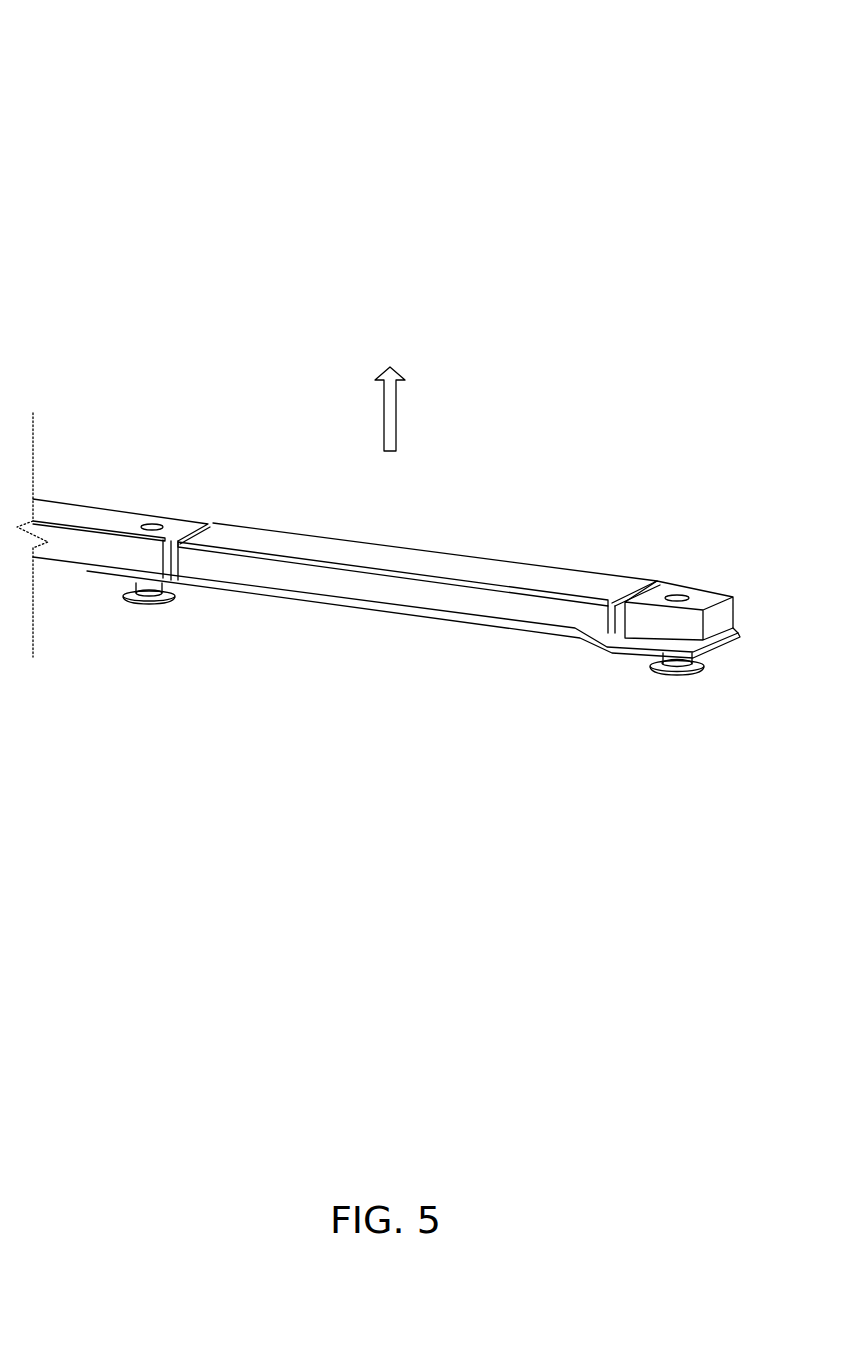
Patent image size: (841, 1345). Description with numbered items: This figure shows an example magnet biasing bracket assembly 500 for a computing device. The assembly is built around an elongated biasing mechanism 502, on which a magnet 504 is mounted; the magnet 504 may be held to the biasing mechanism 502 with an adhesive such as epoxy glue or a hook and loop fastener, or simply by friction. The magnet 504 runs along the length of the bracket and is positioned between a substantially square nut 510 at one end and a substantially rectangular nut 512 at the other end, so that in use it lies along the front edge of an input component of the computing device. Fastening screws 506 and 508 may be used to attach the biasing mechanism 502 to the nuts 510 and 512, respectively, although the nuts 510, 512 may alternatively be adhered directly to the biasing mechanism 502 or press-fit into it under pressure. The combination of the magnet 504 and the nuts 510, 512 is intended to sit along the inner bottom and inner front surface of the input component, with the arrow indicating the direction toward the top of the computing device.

The magnet biasing bracket assembly 500 is at (128, 78).
The biasing mechanism 502 is at (585, 640).
The magnet 504 is at (453, 553).
The fastening screw 506 is at (673, 673).
The fastening screw 508 is at (155, 603).
The substantially square nut 510 is at (687, 588).
The substantially rectangular nut 512 is at (163, 515).